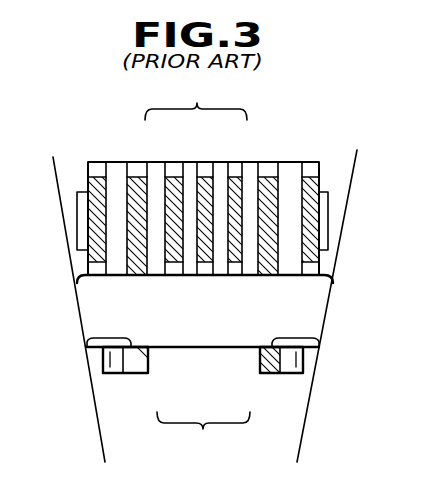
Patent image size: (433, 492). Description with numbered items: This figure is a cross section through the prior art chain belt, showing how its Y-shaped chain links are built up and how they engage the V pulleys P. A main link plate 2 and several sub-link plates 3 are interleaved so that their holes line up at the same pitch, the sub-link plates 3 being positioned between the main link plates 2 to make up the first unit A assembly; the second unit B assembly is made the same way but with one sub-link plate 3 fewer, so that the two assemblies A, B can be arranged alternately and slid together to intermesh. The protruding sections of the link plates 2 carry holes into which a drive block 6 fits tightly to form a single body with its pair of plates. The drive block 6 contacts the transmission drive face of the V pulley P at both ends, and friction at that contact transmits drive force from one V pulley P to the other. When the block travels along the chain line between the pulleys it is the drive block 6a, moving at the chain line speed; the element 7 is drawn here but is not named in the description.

The main link plate 2 is at (137, 170).
The sub-link plate 3 is at (232, 170).
The drive block 6 is at (315, 318).
The drive block (on chain line) 6a is at (333, 293).
The projection 7 is at (132, 346).
The V pulley P is at (55, 168).
The No. 1 unit assembly A is at (203, 434).
The No. 2 unit assembly B is at (196, 99).